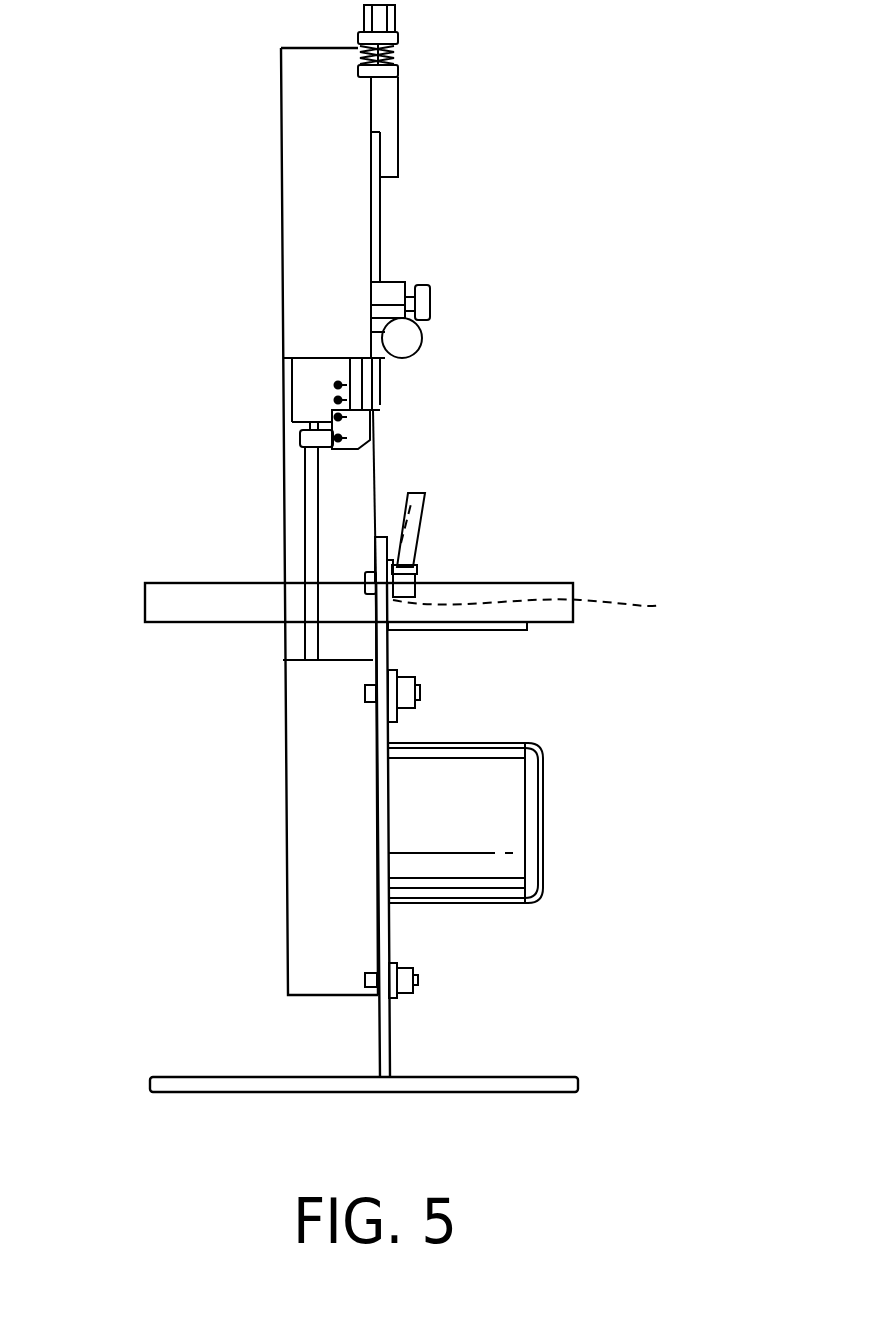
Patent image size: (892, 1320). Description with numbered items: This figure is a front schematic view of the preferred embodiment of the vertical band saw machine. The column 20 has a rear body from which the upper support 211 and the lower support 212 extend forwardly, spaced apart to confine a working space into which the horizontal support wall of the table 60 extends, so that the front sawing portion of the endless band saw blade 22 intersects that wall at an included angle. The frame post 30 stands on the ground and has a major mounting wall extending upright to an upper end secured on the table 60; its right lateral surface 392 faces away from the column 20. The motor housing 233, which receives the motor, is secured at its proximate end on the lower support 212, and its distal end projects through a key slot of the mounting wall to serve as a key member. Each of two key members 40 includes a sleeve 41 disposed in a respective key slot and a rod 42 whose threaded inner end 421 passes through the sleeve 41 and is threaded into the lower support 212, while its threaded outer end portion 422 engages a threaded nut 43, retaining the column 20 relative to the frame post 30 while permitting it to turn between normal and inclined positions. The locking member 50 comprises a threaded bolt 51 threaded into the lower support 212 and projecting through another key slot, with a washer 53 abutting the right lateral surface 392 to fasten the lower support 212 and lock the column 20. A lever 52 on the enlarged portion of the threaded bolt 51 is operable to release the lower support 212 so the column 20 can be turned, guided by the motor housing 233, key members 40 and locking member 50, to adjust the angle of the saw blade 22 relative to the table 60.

The column 20 is at (283, 390).
The endless band saw blade 22 is at (305, 486).
The frame post 30 is at (393, 1064).
The key member 40 is at (405, 727).
The sleeve 41 is at (378, 675).
The rod 42 is at (366, 712).
The threaded nut 43 is at (415, 706).
The locking member 50 is at (418, 573).
The threaded bolt 51 is at (428, 506).
The lever 52 is at (410, 493).
The washer 53 is at (548, 609).
The table 60 is at (143, 607).
The upper support 211 is at (297, 160).
The lower support 212 is at (300, 895).
The motor housing 233 is at (526, 797).
The right lateral surface 392 is at (389, 653).
The threaded inner end 421 is at (365, 693).
The threaded outer end portion 422 is at (420, 689).